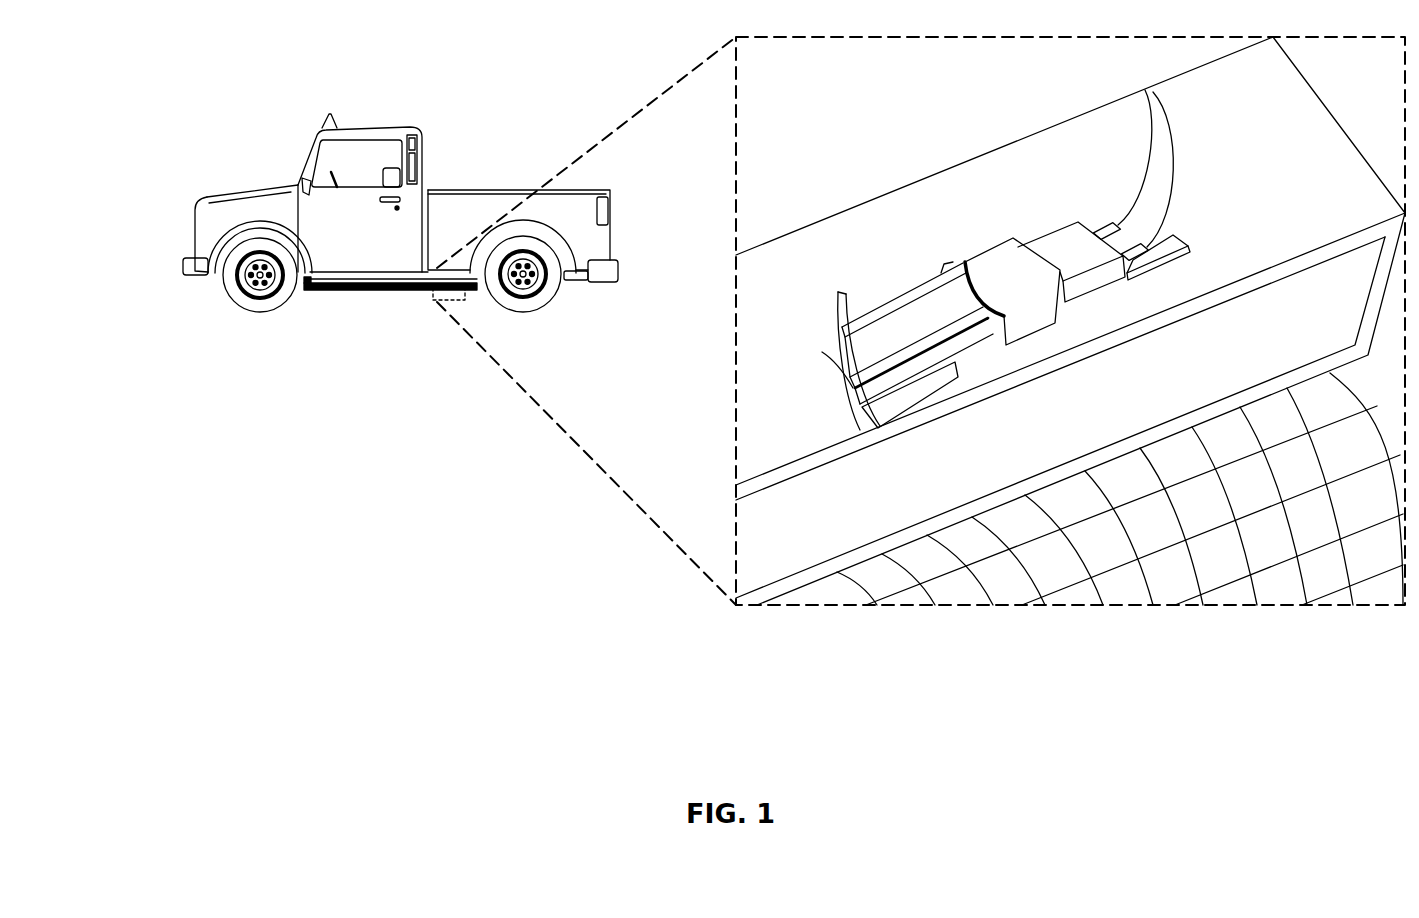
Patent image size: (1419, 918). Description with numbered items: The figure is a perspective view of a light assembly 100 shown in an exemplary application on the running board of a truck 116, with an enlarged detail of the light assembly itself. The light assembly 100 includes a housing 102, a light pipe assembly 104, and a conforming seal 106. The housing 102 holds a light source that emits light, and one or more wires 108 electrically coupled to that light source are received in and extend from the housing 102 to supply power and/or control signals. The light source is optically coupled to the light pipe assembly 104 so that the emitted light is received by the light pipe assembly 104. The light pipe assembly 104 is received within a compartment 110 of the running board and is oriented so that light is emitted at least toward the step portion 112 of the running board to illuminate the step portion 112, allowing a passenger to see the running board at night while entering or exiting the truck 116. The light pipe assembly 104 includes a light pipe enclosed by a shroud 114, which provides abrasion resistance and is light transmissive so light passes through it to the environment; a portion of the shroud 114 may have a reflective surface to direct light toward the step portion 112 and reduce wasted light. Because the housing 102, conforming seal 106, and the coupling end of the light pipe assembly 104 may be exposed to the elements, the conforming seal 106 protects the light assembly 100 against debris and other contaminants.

The light assembly 100 is at (952, 213).
The housing 102 is at (1053, 228).
The light pipe assembly 104 is at (876, 285).
The conforming seal 106 is at (990, 241).
The wire 108 is at (1150, 167).
The compartment 110 is at (833, 300).
The step portion 112 is at (1107, 585).
The shroud 114 is at (945, 296).
The truck 116 is at (190, 90).